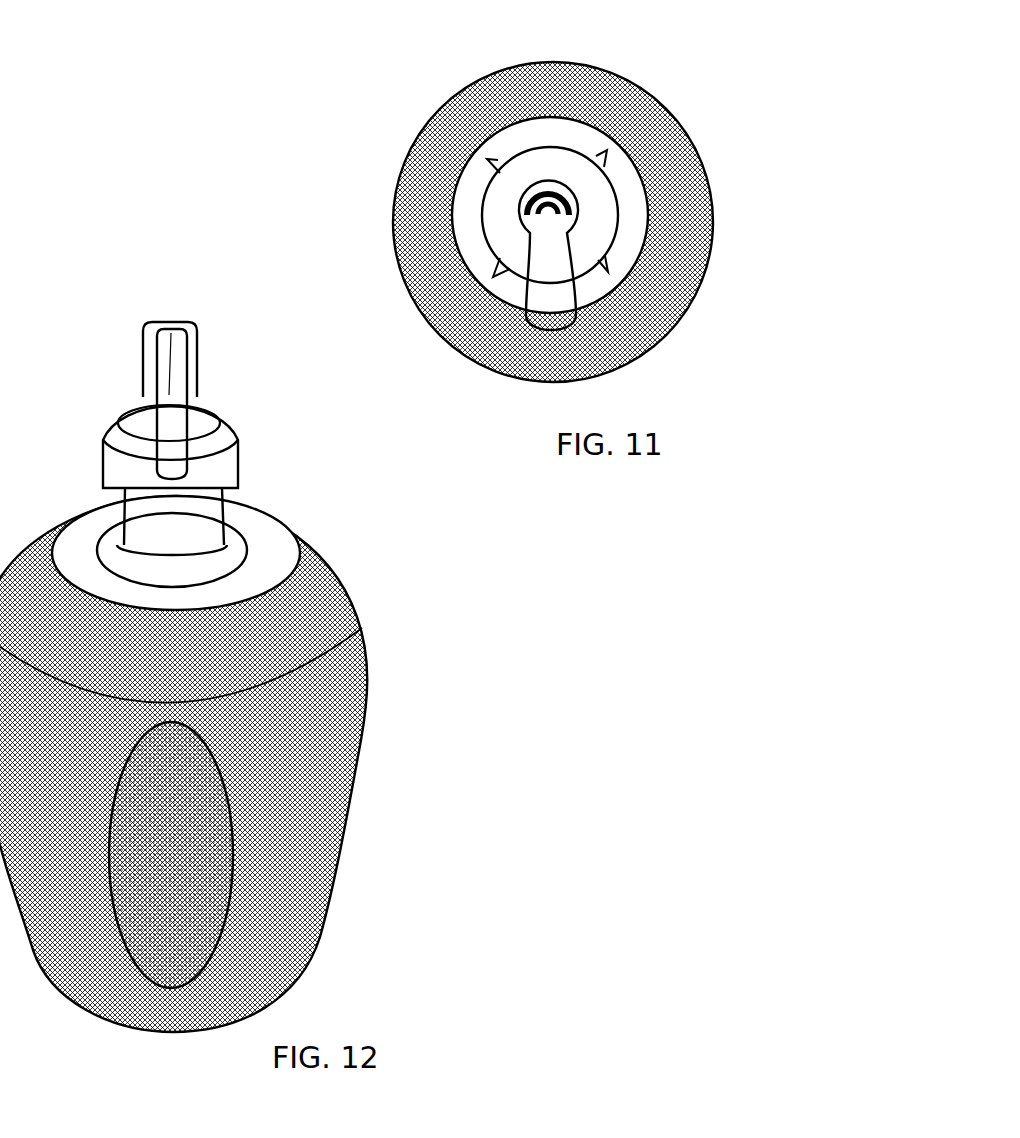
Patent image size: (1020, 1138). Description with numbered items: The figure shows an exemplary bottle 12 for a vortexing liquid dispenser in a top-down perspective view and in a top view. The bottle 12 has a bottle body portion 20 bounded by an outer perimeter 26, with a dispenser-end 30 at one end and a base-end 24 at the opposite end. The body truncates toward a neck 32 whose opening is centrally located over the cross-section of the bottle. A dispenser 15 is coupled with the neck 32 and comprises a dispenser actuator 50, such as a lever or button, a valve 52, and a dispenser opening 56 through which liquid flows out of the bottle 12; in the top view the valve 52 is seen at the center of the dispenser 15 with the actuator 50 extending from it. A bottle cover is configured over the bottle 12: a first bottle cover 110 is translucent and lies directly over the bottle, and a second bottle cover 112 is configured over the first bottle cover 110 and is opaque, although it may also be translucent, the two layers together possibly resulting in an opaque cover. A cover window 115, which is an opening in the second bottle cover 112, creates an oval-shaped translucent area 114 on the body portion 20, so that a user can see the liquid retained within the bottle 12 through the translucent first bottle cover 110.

In FIG. 11, the bottle 12 is at (563, 97).
In FIG. 12, the bottle 12 is at (335, 720).
In FIG. 11, the dispenser 15 is at (507, 238).
In FIG. 12, the dispenser 15 is at (202, 430).
In FIG. 11, the bottle body portion 20 is at (652, 297).
In FIG. 12, the bottle body portion 20 is at (293, 950).
In FIG. 12, the base-end 24 is at (142, 1028).
In FIG. 12, the outer perimeter 26 is at (342, 652).
In FIG. 11, the dispenser-end 30 is at (662, 113).
In FIG. 12, the dispenser-end 30 is at (313, 597).
In FIG. 12, the neck 32 is at (138, 513).
In FIG. 11, the dispenser actuator 50 is at (550, 303).
In FIG. 12, the dispenser actuator 50 is at (172, 460).
In FIG. 11, the valve 52 is at (533, 187).
In FIG. 12, the dispenser opening 56 is at (172, 350).
In FIG. 12, the first bottle cover 110 is at (217, 833).
In FIG. 11, the second bottle cover 112 is at (415, 200).
In FIG. 12, the second bottle cover 112 is at (312, 763).
In FIG. 12, the translucent area 114 is at (179, 796).
In FIG. 12, the cover window 115 is at (203, 873).